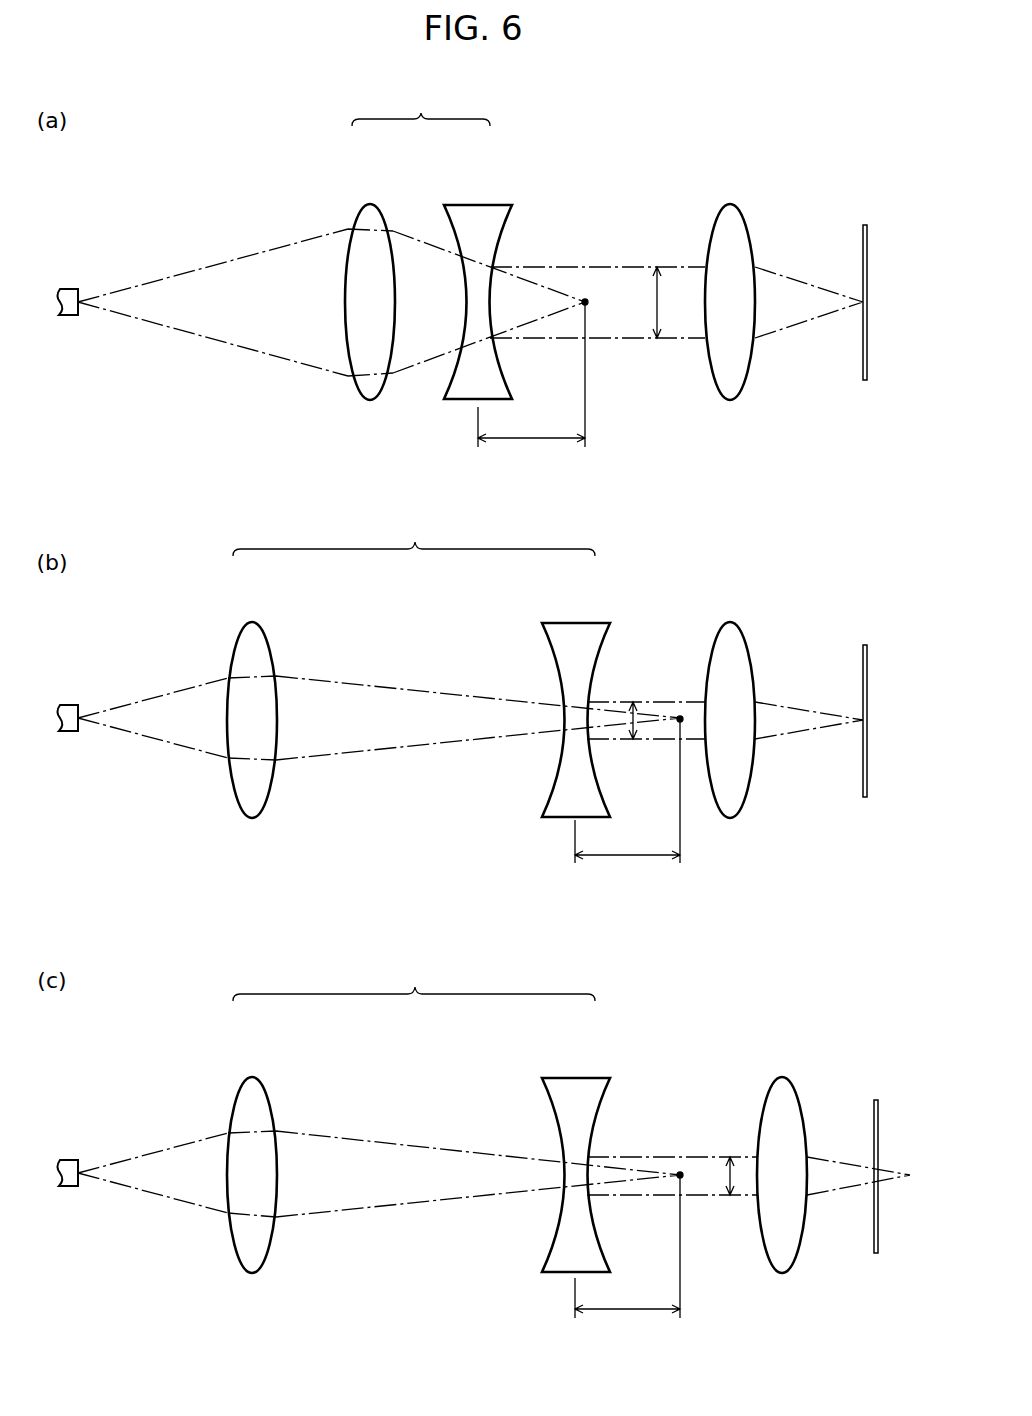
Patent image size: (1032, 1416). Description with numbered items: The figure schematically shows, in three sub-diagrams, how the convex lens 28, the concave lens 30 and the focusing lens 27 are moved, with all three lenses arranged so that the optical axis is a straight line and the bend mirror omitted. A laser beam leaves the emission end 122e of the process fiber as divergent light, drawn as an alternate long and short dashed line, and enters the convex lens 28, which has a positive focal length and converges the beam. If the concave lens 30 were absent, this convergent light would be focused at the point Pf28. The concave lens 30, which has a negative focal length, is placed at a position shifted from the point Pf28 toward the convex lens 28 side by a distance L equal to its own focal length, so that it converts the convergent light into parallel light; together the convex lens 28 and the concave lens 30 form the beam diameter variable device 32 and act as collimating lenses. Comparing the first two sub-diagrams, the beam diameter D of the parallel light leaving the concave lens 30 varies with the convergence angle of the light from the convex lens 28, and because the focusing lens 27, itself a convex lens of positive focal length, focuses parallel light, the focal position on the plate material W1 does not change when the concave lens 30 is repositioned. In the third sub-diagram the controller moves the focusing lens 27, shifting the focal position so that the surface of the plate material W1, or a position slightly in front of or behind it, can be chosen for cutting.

The emission end 122e is at (67, 289).
The convex lens 28 is at (370, 204).
The concave lens 30 is at (478, 204).
The beam diameter variable device 32 is at (414, 542).
The focusing lens 27 is at (730, 204).
The plate material W1 is at (866, 225).
The point Pf28 is at (585, 299).
The beam diameter D is at (631, 712).
The distance L is at (579, 811).